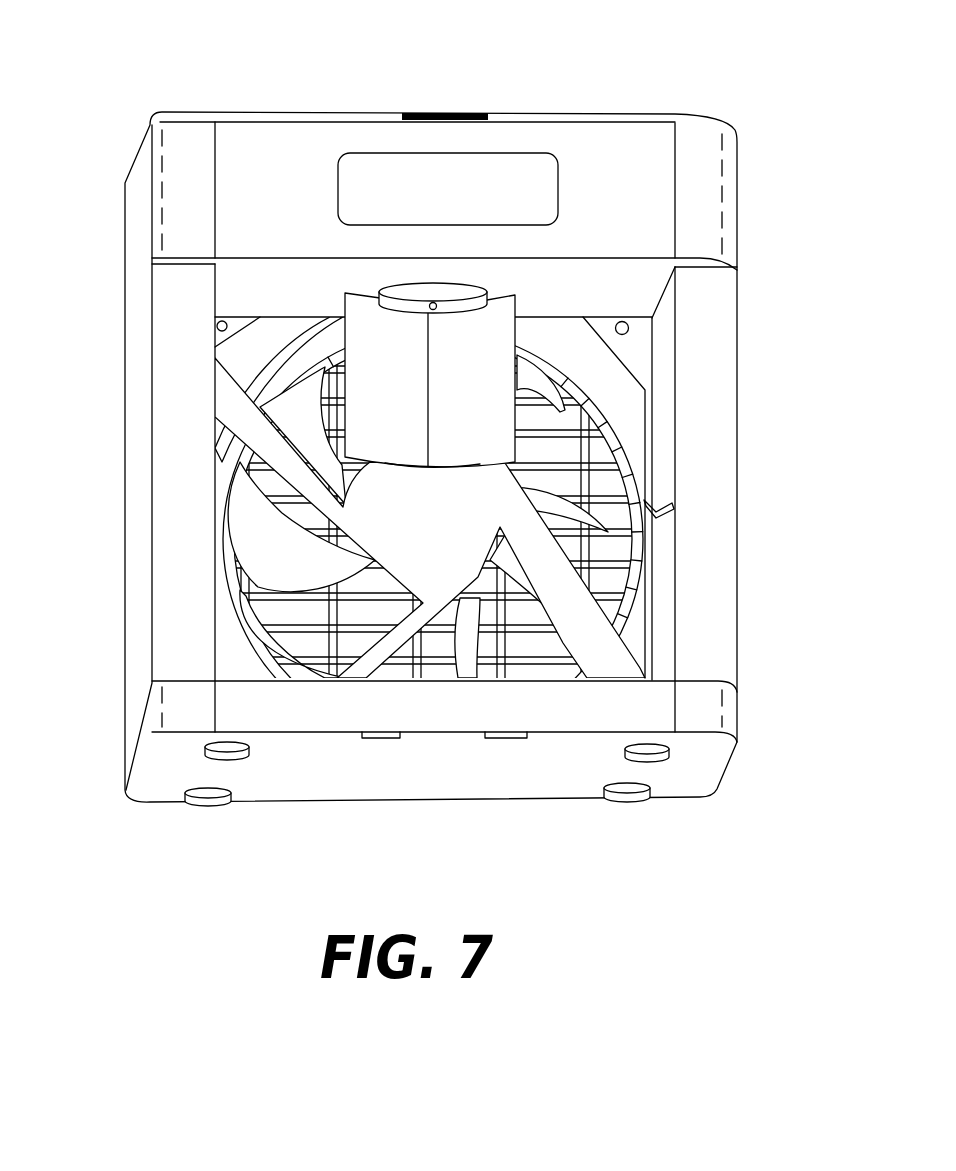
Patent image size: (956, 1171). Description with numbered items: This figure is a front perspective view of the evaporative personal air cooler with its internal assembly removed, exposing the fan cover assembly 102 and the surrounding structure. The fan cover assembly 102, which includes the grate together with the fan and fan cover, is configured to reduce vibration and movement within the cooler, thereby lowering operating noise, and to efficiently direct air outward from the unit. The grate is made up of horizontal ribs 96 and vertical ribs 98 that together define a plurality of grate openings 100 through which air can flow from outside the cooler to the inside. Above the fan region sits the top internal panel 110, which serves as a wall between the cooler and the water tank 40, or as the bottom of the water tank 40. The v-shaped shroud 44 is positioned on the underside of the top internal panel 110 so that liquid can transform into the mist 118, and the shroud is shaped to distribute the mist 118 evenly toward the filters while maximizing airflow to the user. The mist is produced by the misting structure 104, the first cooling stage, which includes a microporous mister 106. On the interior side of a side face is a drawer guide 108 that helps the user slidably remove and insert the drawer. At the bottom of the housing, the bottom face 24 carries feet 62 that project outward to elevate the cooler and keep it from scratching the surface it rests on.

The water tank 40 is at (714, 183).
The bottom face 24 is at (328, 778).
The feet 62 is at (207, 803).
The top internal panel 110 is at (642, 285).
The misting structure 104 is at (451, 234).
The v-shaped shroud 44 is at (365, 298).
The mister 106 is at (429, 262).
The mist 118 is at (396, 328).
The fan cover assembly 102 is at (244, 370).
The horizontal ribs 96 is at (572, 483).
The vertical ribs 98 is at (510, 645).
The grate openings 100 is at (640, 477).
The drawer guide 108 is at (663, 522).